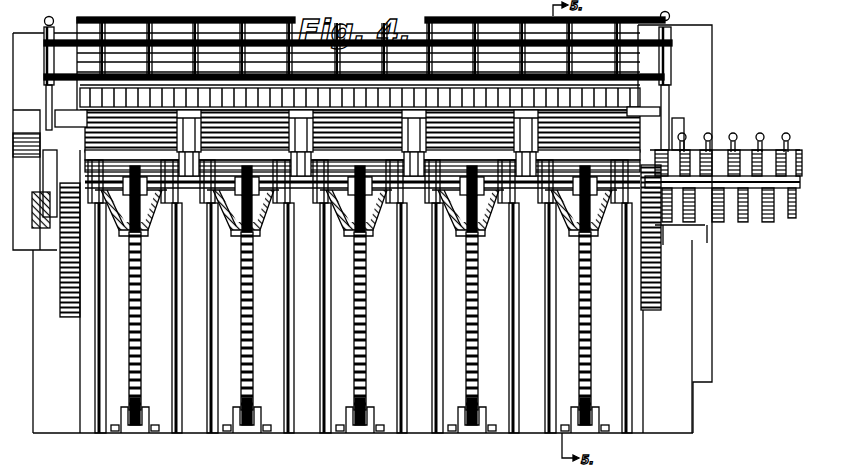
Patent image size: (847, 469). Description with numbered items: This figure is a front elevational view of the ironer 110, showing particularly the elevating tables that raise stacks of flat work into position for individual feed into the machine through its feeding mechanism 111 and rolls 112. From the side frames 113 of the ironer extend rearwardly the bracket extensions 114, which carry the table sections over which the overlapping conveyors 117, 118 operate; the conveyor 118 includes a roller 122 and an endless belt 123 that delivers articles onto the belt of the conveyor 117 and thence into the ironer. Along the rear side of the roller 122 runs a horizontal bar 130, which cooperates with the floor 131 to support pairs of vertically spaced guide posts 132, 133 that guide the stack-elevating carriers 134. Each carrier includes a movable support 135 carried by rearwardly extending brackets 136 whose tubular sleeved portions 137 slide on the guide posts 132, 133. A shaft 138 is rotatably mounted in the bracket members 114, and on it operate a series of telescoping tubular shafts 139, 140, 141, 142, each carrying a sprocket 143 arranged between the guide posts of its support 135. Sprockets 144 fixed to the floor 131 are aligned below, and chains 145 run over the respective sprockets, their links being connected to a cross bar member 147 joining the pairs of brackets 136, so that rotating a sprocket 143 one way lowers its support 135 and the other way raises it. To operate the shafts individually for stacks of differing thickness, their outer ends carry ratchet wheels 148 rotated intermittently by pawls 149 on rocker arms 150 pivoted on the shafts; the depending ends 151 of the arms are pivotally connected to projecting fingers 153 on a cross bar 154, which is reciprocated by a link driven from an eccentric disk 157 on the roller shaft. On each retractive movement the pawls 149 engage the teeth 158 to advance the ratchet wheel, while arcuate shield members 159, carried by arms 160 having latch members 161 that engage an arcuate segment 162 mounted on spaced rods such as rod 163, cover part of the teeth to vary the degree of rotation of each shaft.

The ironer 110 is at (700, 57).
The feeding mechanism 111 is at (720, 68).
The rolls 112 is at (628, 62).
The side frames 113 is at (60, 424).
The bracket extensions 114 is at (71, 314).
The conveyor 117 is at (163, 216).
The conveyor 118 is at (197, 192).
The roller 122 is at (51, 104).
The endless belt 123 is at (309, 192).
The horizontal bar 130 is at (650, 105).
The floor 131 is at (393, 432).
The guide post 132 is at (512, 322).
The guide post 133 is at (434, 296).
The stack-elevating members or carriers 134 is at (423, 194).
The movable shelves or supports 135 is at (270, 218).
The brackets 136 is at (526, 194).
The tubular sleeved portions 137 is at (440, 220).
The shaft 138 is at (117, 216).
The telescoping tubular shaft 139 is at (288, 220).
The telescoping tubular shaft 140 is at (389, 218).
The telescoping tubular shaft 141 is at (499, 218).
The telescoping tubular shaft 142 is at (607, 218).
The sprockets 143 is at (349, 220).
The sprockets 144 is at (468, 432).
The chains 145 is at (258, 362).
The cross bar member 147 is at (235, 228).
The ratchet wheels 148 is at (663, 228).
The pawls 149 is at (700, 152).
The rocker arms 150 is at (723, 155).
The depending ends 151 is at (712, 207).
The projecting fingers 153 is at (755, 227).
The cross bar 154 is at (758, 220).
The eccentric disk 157 is at (680, 112).
The teeth 158 is at (708, 223).
The arcuate-shaped shield members 159 is at (742, 140).
The arms 160 is at (762, 150).
The latch members 161 is at (776, 152).
The arcuate segment 162 is at (800, 155).
The rod 163 is at (780, 192).